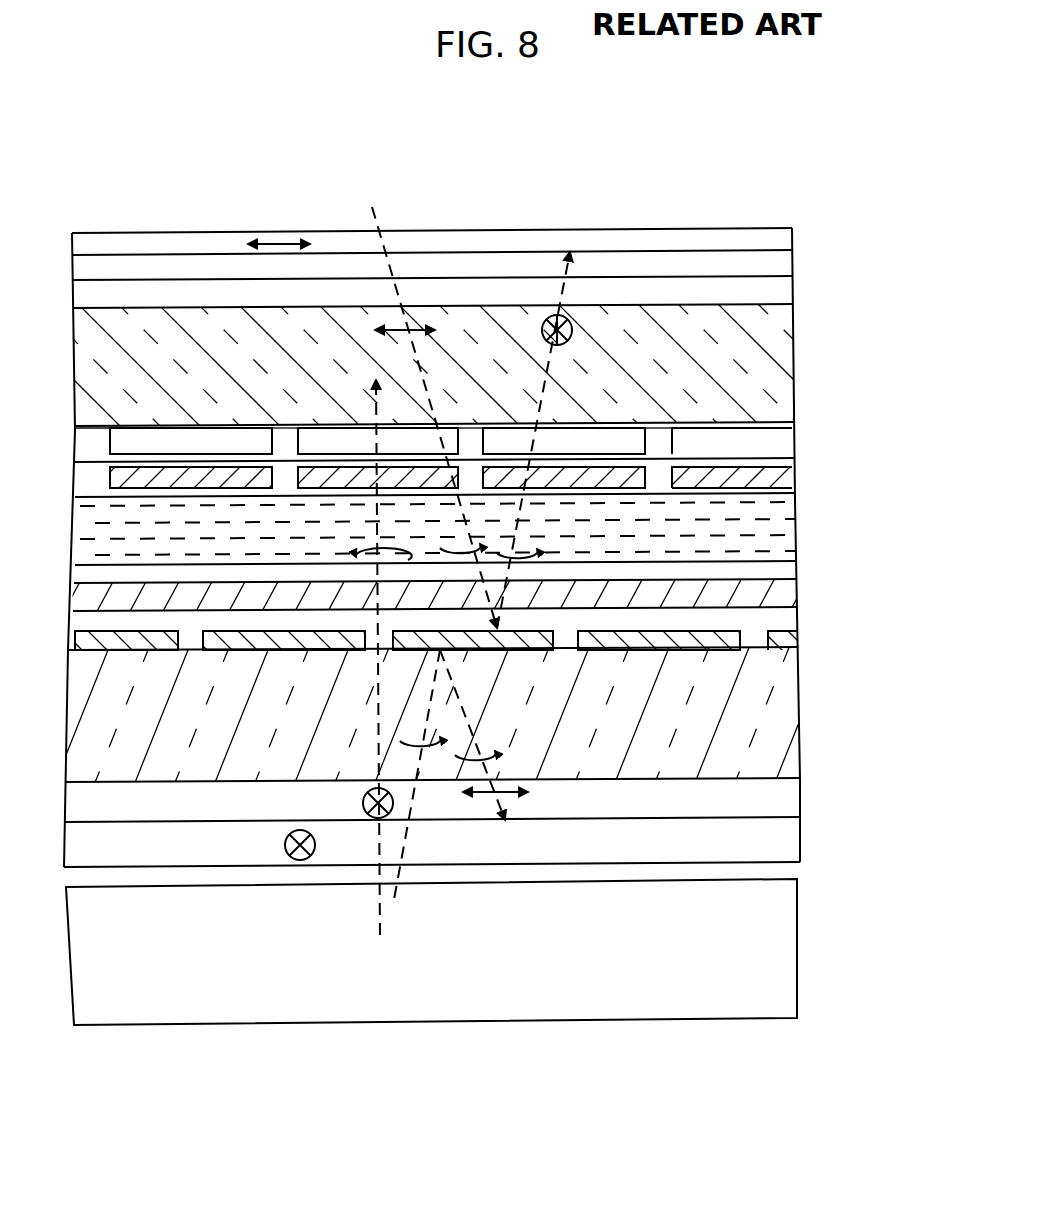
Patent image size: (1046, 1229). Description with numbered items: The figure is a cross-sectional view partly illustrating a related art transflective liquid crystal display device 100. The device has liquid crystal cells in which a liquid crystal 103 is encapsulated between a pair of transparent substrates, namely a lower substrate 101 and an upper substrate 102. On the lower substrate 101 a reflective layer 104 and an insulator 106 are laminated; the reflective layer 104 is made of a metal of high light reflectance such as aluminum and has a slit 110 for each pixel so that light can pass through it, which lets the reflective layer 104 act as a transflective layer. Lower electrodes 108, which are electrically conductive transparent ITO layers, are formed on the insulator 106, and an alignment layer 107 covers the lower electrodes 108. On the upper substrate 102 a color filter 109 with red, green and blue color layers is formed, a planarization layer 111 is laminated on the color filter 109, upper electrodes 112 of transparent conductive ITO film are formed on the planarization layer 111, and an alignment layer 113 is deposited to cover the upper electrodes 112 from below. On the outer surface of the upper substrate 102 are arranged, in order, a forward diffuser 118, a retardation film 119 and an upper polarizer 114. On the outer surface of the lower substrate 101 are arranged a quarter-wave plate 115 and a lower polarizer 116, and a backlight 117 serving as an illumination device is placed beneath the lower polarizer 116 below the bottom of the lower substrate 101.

The liquid crystal display device 100 is at (437, 190).
The lower substrate 101 is at (797, 728).
The upper substrate 102 is at (793, 357).
The liquid crystal 103 is at (795, 522).
The reflective layer 104 is at (728, 648).
The insulator 106 is at (796, 622).
The alignment layer 107 is at (795, 572).
The lower electrodes 108 is at (795, 598).
The color filter 109 is at (794, 430).
The slit 110 is at (553, 643).
The planarization layer 111 is at (794, 452).
The upper electrodes 112 is at (795, 478).
The alignment layer 113 is at (795, 490).
The upper polarizer 114 is at (792, 233).
The ¼-wave plate 115 is at (798, 795).
The lower polarizer 116 is at (799, 838).
The backlight 117 is at (244, 1022).
The forward diffuser 118 is at (793, 290).
The retardation film 119 is at (792, 262).